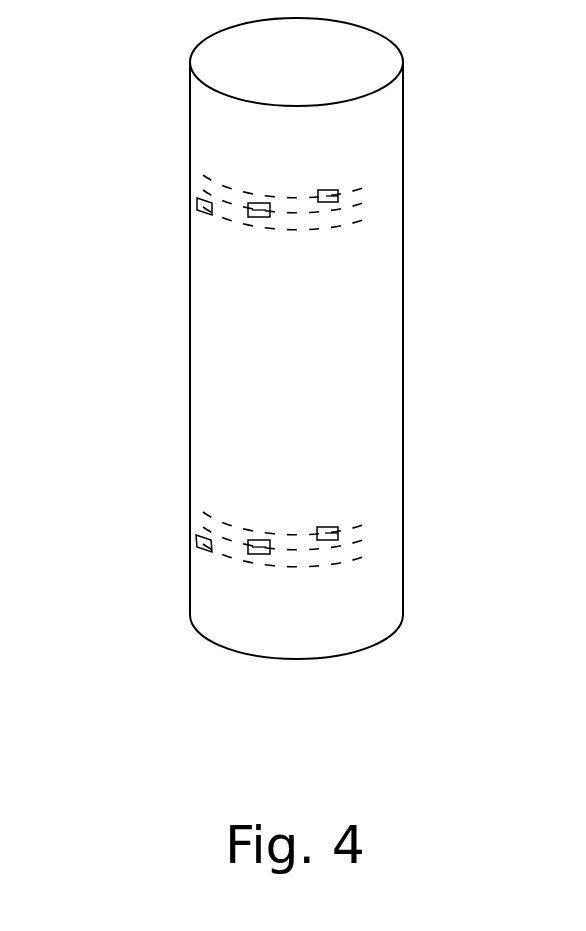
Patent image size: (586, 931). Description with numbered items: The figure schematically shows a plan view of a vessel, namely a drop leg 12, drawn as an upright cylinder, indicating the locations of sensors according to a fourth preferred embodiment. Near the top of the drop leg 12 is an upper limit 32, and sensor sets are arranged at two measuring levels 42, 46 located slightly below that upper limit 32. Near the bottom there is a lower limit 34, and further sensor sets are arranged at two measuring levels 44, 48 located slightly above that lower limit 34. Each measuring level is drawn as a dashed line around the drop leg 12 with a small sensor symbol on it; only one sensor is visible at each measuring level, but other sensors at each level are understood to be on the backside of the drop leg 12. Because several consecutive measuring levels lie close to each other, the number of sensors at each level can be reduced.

The drop leg 12 is at (188, 313).
The upper limit 32 is at (377, 182).
The measuring level 42 is at (377, 197).
The measuring level 46 is at (378, 210).
The measuring level 48 is at (377, 520).
The measuring level 44 is at (377, 537).
The lower limit 34 is at (380, 550).